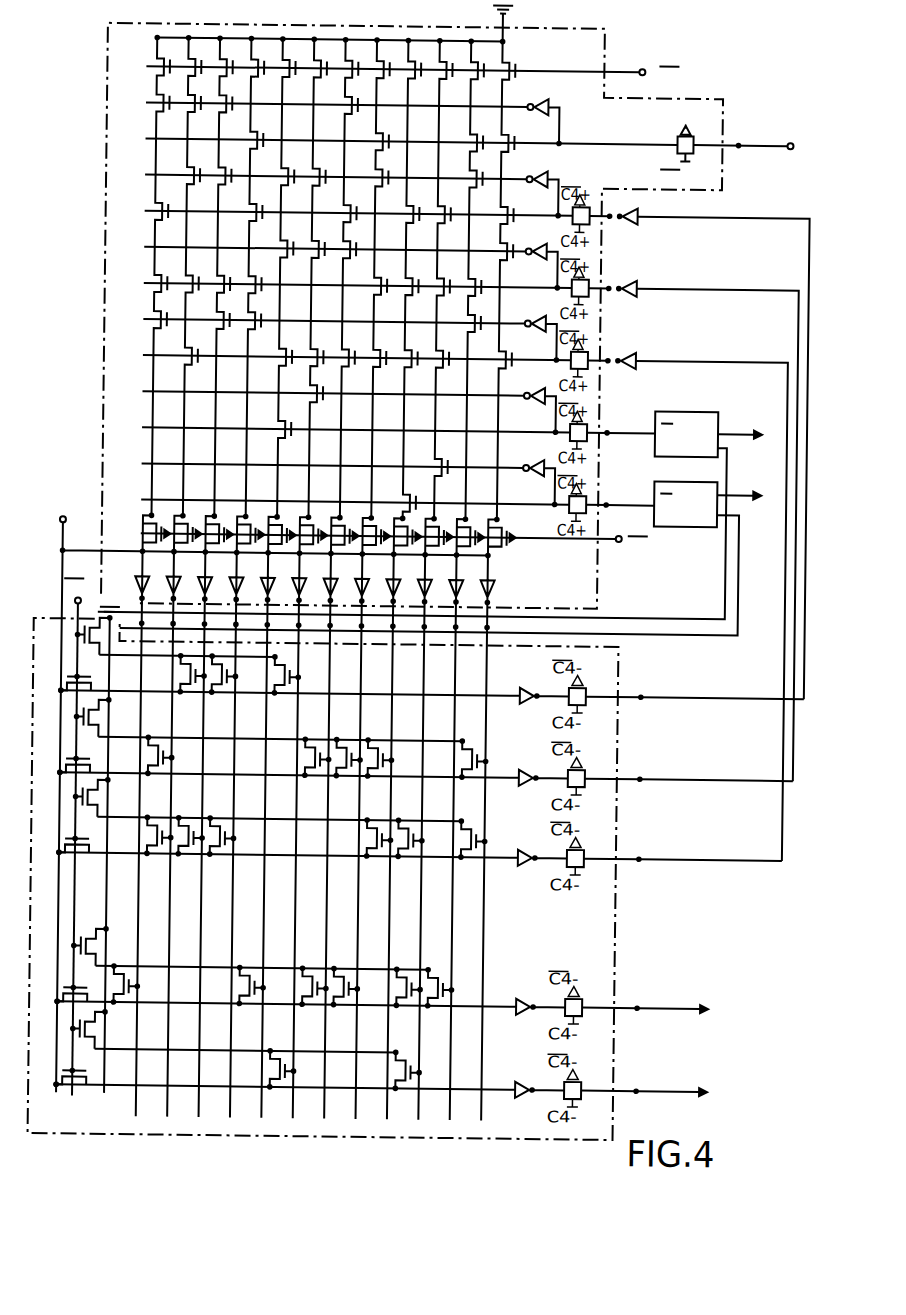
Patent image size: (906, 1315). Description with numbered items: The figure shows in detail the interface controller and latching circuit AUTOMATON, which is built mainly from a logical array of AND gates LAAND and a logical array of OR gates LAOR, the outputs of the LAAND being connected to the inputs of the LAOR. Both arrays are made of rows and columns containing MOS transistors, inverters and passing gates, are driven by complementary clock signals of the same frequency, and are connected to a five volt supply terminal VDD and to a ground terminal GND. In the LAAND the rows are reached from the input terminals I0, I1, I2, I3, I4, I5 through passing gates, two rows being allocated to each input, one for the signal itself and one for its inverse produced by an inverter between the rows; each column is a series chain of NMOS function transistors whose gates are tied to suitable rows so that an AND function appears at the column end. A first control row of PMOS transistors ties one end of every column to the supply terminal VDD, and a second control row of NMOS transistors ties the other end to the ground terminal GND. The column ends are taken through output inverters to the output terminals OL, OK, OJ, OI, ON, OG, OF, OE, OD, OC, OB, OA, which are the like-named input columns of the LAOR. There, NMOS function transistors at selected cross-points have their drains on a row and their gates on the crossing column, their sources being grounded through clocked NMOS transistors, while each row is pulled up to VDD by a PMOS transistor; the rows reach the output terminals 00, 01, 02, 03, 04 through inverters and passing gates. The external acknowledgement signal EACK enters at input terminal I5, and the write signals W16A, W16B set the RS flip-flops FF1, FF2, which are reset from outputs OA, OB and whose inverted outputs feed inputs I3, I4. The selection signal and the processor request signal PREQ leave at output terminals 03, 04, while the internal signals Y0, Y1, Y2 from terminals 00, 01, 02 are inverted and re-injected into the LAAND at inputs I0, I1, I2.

The logical array of AND gates LAAND is at (101, 246).
The logical array of OR gates LAOR is at (652, 931).
The interface controller and latching circuit AUTOMATON is at (400, 1176).
The input terminal I0 is at (574, 211).
The input terminal I1 is at (573, 283).
The input terminal I2 is at (572, 356).
The input terminal I3 is at (589, 428).
The input terminal I4 is at (588, 500).
The input terminal I5 is at (660, 144).
The internal signal Y0 is at (710, 446).
The internal signal Y1 is at (704, 523).
The internal signal Y2 is at (698, 599).
The RS flip-flop FF1 is at (683, 405).
The RS flip-flop FF2 is at (683, 528).
The write signal W16A is at (748, 486).
The write signal W16B is at (748, 425).
The output terminal 00 is at (419, 836).
The output terminal 01 is at (425, 756).
The output terminal 02 is at (431, 674).
The output terminal 03 is at (381, 985).
The output terminal 04 is at (380, 1068).
The acknowledgement signal EACK is at (793, 134).
The processor request signal PREQ is at (735, 1094).
The ground terminal GND is at (529, 12).
The supply terminal VDD is at (264, 791).
The output terminal OL is at (150, 814).
The output terminal OK is at (181, 815).
The output terminal OJ is at (213, 815).
The output terminal OI is at (244, 816).
The output terminal ON is at (275, 816).
The output terminal OG is at (307, 816).
The output terminal OF is at (338, 817).
The output terminal OE is at (370, 817).
The output terminal OD is at (401, 817).
The output terminal OC is at (432, 818).
The output terminal OB is at (464, 818).
The output terminal OA is at (495, 819).